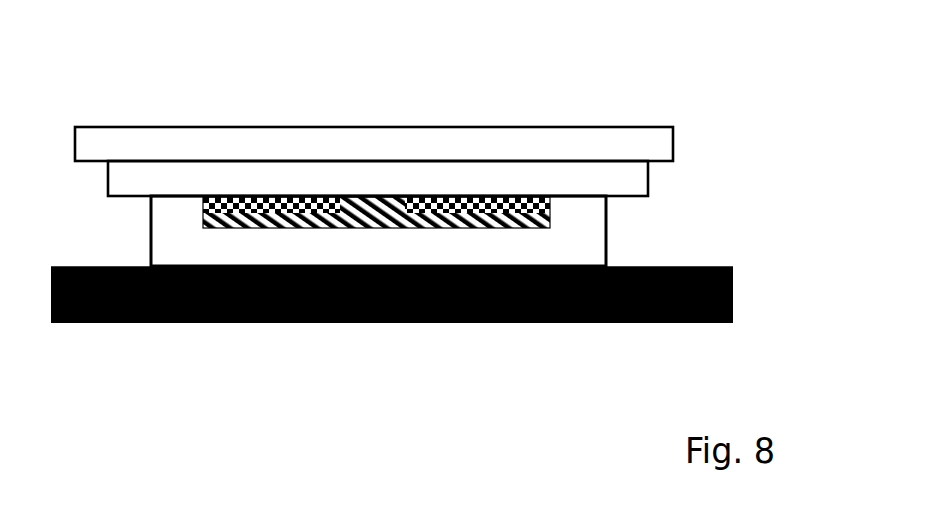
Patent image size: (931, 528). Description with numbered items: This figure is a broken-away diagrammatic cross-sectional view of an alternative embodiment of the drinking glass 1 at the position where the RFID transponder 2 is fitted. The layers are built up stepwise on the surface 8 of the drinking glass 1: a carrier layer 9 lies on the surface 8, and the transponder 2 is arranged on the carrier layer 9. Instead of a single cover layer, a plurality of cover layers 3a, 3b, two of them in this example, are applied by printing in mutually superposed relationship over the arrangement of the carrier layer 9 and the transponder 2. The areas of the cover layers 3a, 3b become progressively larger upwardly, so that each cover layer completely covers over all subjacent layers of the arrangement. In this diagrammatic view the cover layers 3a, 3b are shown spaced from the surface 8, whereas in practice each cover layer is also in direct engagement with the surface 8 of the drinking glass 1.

The drinking glass 1 is at (350, 323).
The RFID transponder 2 is at (562, 217).
The cover layer 3a is at (542, 172).
The cover layer 3b is at (390, 149).
The surface 8 is at (55, 267).
The carrier layer 9 is at (237, 238).